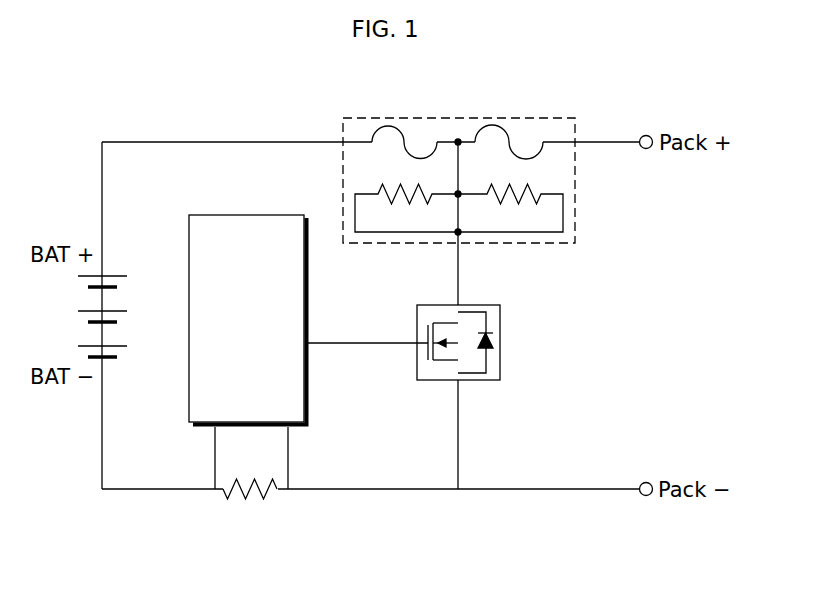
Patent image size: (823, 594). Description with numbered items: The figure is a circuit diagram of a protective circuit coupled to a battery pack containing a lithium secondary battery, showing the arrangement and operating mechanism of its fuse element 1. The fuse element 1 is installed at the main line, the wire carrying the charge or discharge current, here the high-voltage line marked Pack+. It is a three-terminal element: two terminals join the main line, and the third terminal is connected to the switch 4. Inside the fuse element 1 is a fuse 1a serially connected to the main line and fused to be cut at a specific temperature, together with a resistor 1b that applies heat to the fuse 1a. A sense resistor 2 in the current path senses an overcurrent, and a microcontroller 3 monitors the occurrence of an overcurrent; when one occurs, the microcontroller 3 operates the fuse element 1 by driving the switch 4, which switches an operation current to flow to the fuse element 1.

The fuse element 1 is at (546, 118).
The fuse 1a is at (389, 124).
The resistor 1b is at (397, 205).
The sense resistor 2 is at (247, 499).
The microcontroller 3 is at (246, 215).
The switch 4 is at (501, 343).